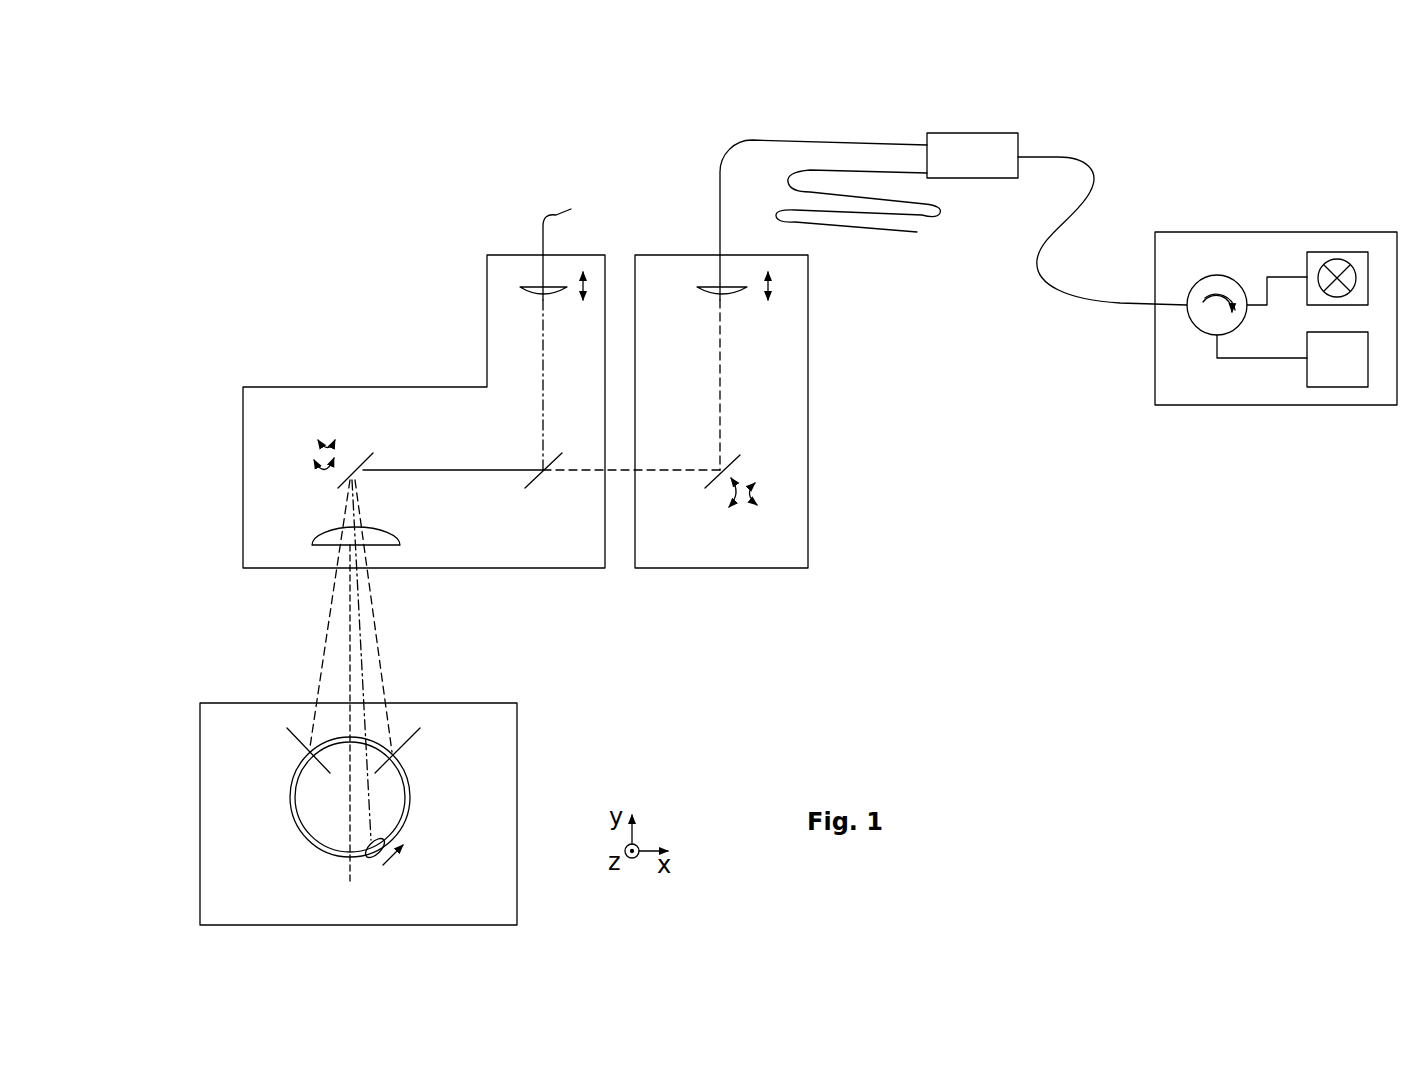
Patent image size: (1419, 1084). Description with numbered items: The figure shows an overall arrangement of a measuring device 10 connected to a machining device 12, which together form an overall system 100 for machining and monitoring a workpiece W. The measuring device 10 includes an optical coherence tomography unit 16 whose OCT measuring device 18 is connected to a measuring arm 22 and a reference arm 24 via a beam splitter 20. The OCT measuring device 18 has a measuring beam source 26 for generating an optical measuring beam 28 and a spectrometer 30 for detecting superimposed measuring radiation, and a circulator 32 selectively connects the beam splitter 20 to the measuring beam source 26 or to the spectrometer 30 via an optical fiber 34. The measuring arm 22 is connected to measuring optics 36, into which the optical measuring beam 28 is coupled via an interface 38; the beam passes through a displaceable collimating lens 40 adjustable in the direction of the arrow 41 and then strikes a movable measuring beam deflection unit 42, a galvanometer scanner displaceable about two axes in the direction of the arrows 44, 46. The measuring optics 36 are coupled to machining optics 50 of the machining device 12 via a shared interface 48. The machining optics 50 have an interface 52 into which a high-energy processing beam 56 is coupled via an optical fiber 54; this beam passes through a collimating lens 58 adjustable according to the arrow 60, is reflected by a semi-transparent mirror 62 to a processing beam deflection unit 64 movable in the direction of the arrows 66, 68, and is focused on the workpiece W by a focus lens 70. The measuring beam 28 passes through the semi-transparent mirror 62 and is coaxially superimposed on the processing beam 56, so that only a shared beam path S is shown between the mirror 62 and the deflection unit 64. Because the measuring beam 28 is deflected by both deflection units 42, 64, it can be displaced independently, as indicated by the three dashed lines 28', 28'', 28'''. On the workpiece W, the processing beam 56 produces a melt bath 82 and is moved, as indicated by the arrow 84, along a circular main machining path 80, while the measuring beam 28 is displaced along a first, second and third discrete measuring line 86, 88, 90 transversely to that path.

The measuring device 10 is at (1006, 503).
The overall system 100 is at (1052, 740).
The machining device 12 is at (506, 401).
The optical coherence tomography unit 16 is at (1238, 276).
The OCT measuring device 18 is at (1238, 316).
The beam splitter 20 is at (980, 127).
The measuring arm 22 is at (824, 169).
The reference arm 24 is at (858, 238).
The measuring beam source 26 is at (1350, 231).
The optical measuring beam 28 is at (722, 385).
The first dashed line 28' is at (289, 613).
The second dashed line 28'' is at (438, 616).
The third dashed line 28''' is at (416, 660).
The spectrometer 30 is at (1324, 408).
The circulator 32 is at (1163, 363).
The optical fiber 34 is at (1093, 262).
The measuring optics 36 is at (766, 411).
The interface 38 is at (697, 210).
The collimating lens 40 is at (693, 244).
The arrow 41 is at (826, 320).
The measuring beam deflection unit 42 is at (723, 551).
The arrow 44 is at (795, 558).
The arrow 46 is at (817, 533).
The shared interface 48 is at (616, 587).
The machining optics 50 is at (377, 411).
The interface 52 is at (503, 212).
The optical fiber 54 is at (532, 190).
The high-energy processing beam 56 is at (476, 382).
The collimating lens 58 is at (497, 248).
The arrow 60 is at (603, 230).
The semi-transparent mirror 62 is at (550, 545).
The processing beam deflection unit 64 is at (336, 397).
The arrow 66 is at (290, 381).
The arrow 68 is at (248, 499).
The focus lens 70 is at (316, 573).
The main machining path 80 is at (321, 819).
The melt bath 82 is at (427, 838).
The arrow 84 is at (441, 875).
The first discrete measuring line 86 is at (274, 761).
The second discrete measuring line 88 is at (442, 749).
The third discrete measuring line 90 is at (393, 733).
The shared beam path S is at (453, 554).
The workpiece W is at (301, 813).